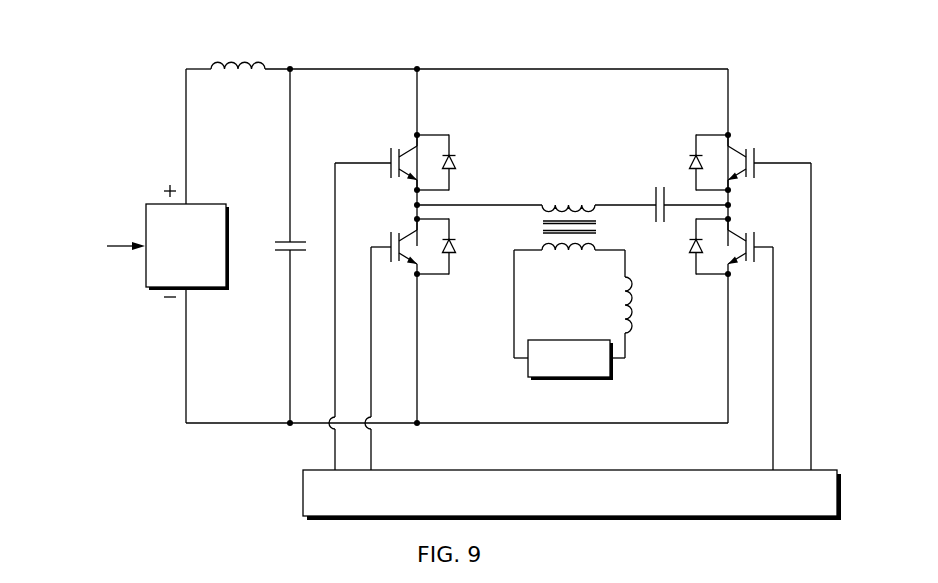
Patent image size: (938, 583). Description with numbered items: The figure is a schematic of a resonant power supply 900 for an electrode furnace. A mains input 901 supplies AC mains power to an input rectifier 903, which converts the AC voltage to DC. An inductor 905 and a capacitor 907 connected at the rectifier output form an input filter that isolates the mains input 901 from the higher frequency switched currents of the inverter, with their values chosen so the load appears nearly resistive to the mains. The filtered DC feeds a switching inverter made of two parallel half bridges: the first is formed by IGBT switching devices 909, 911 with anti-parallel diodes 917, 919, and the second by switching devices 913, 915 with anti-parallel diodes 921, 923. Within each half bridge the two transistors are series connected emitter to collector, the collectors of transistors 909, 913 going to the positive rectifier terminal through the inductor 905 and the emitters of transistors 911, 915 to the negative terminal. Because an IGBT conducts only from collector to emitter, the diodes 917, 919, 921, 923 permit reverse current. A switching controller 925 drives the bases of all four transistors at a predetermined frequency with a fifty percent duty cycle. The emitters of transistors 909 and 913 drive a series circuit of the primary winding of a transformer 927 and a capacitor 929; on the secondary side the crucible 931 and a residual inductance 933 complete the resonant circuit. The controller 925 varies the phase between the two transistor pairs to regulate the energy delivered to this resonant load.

The supply 900 is at (120, 48).
The mains input 901 is at (77, 209).
The input rectifier 903 is at (212, 203).
The inductor 905 is at (232, 55).
The capacitor 907 is at (272, 247).
The switching device 909 is at (406, 146).
The switching device 911 is at (406, 231).
The switching device 913 is at (734, 146).
The switching device 915 is at (734, 231).
The anti-parallel diode 917 is at (458, 160).
The anti-parallel diode 919 is at (458, 244).
The anti-parallel diode 921 is at (690, 153).
The anti-parallel diode 923 is at (690, 255).
The switching controller 925 is at (826, 469).
The transformer 927 is at (567, 202).
The capacitor 929 is at (658, 190).
The crucible 931 is at (565, 340).
The residual inductance 933 is at (641, 324).